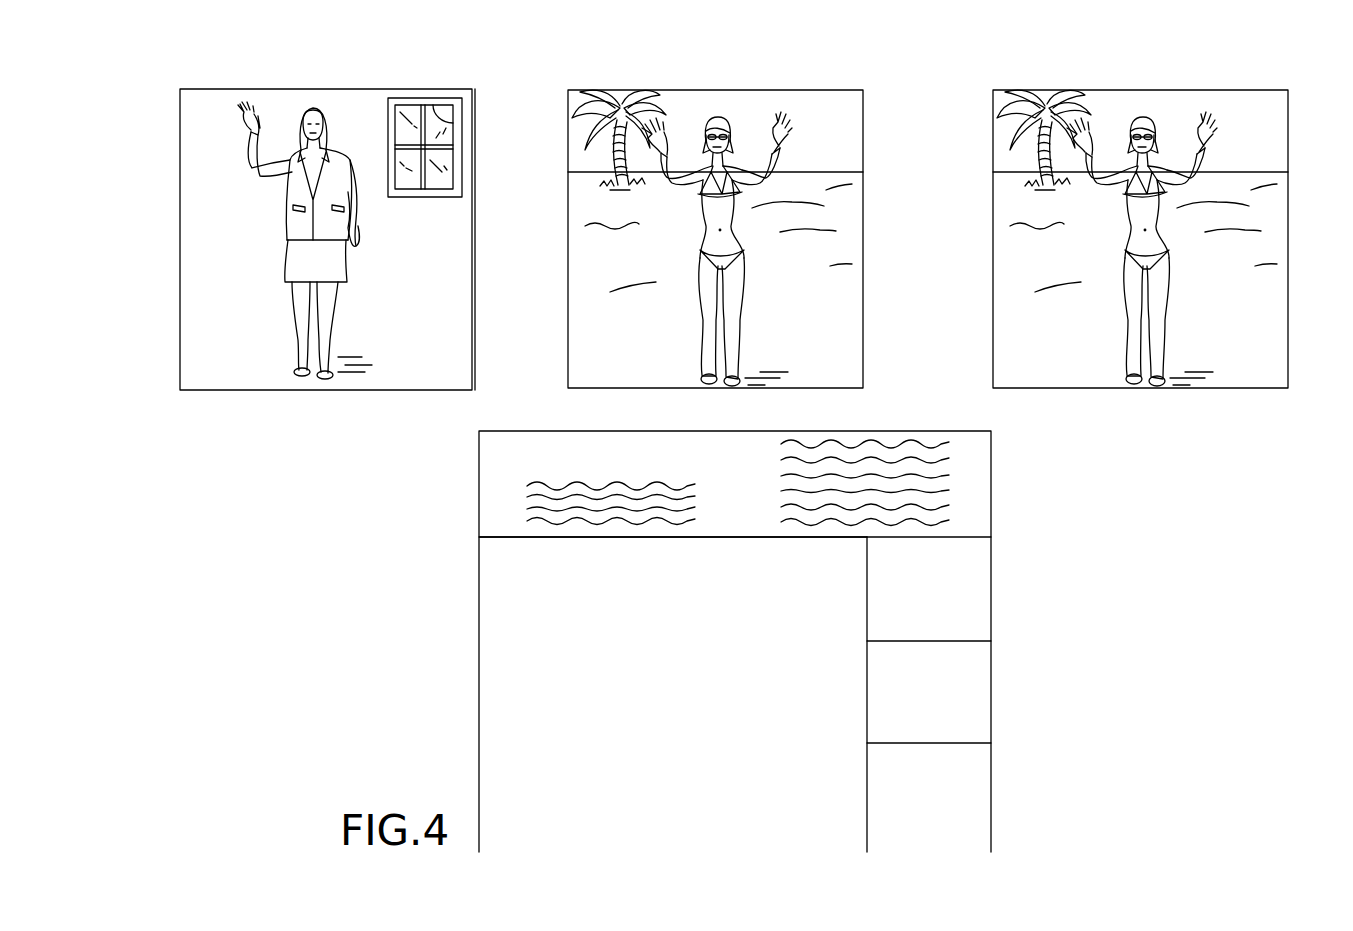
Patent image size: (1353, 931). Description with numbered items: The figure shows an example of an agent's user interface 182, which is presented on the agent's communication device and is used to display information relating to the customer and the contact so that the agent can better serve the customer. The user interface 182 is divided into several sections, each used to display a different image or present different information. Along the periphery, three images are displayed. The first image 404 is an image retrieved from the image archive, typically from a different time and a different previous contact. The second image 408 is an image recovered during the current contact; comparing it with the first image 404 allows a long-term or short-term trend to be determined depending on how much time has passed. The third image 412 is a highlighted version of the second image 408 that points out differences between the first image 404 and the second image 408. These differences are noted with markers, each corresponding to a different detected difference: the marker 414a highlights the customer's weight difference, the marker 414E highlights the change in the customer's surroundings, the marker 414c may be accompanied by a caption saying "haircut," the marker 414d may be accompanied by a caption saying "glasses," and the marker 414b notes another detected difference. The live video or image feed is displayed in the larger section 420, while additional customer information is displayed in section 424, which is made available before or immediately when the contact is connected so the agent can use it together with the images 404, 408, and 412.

The user interface 182 is at (642, 450).
The first image 404 is at (180, 262).
The second image 408 is at (568, 265).
The third image 412 is at (1110, 440).
The marker 414a is at (1186, 238).
The marker 414b is at (1177, 172).
The marker 414c is at (1176, 124).
The marker 414d is at (1153, 106).
The marker 414E is at (1080, 80).
The larger section 420 is at (497, 656).
The section 424 is at (529, 436).